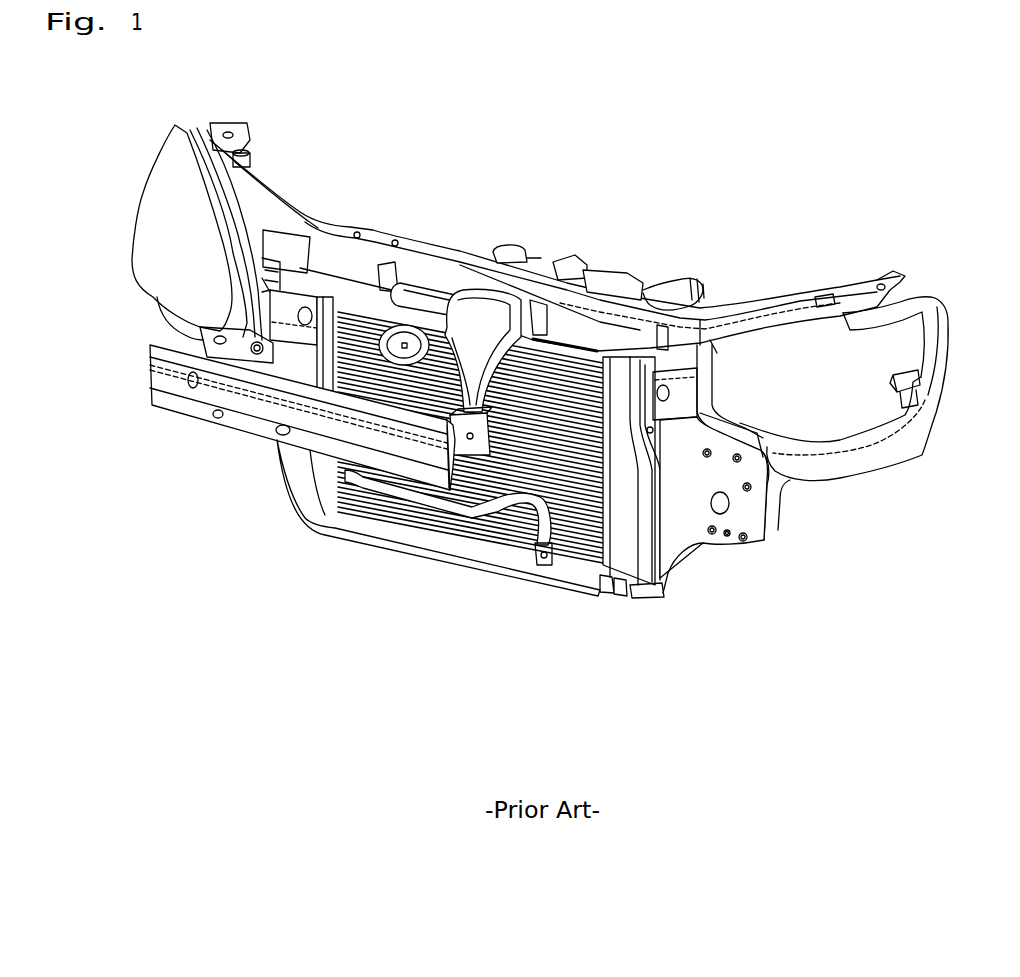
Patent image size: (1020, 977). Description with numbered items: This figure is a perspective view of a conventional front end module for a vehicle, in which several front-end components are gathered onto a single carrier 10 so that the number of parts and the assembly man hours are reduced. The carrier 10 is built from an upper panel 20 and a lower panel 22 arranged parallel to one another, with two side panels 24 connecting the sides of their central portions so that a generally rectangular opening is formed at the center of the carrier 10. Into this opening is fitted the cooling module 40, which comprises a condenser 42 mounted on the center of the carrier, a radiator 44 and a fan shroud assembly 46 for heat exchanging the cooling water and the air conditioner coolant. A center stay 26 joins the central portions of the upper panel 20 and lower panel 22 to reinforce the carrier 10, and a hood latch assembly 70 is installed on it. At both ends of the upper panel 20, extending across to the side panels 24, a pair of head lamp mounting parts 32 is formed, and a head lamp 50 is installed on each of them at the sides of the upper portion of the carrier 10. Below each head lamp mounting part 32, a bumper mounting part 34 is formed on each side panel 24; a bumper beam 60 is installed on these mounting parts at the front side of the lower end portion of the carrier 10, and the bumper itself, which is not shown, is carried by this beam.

The carrier 10 is at (321, 217).
The upper panel 20 is at (378, 240).
The lower panel 22 is at (428, 540).
The side panel 24 is at (623, 527).
The center stay 26 is at (505, 390).
The head lamp mounting part 32 is at (832, 413).
The bumper mounting part 34 is at (748, 520).
The cooling module 40 is at (616, 261).
The condenser 42 is at (480, 503).
The radiator 44 is at (513, 243).
The fan shroud assembly 46 is at (585, 262).
The head lamp 50 is at (162, 167).
The bumper beam 60 is at (243, 427).
The hood latch assembly 70 is at (468, 315).